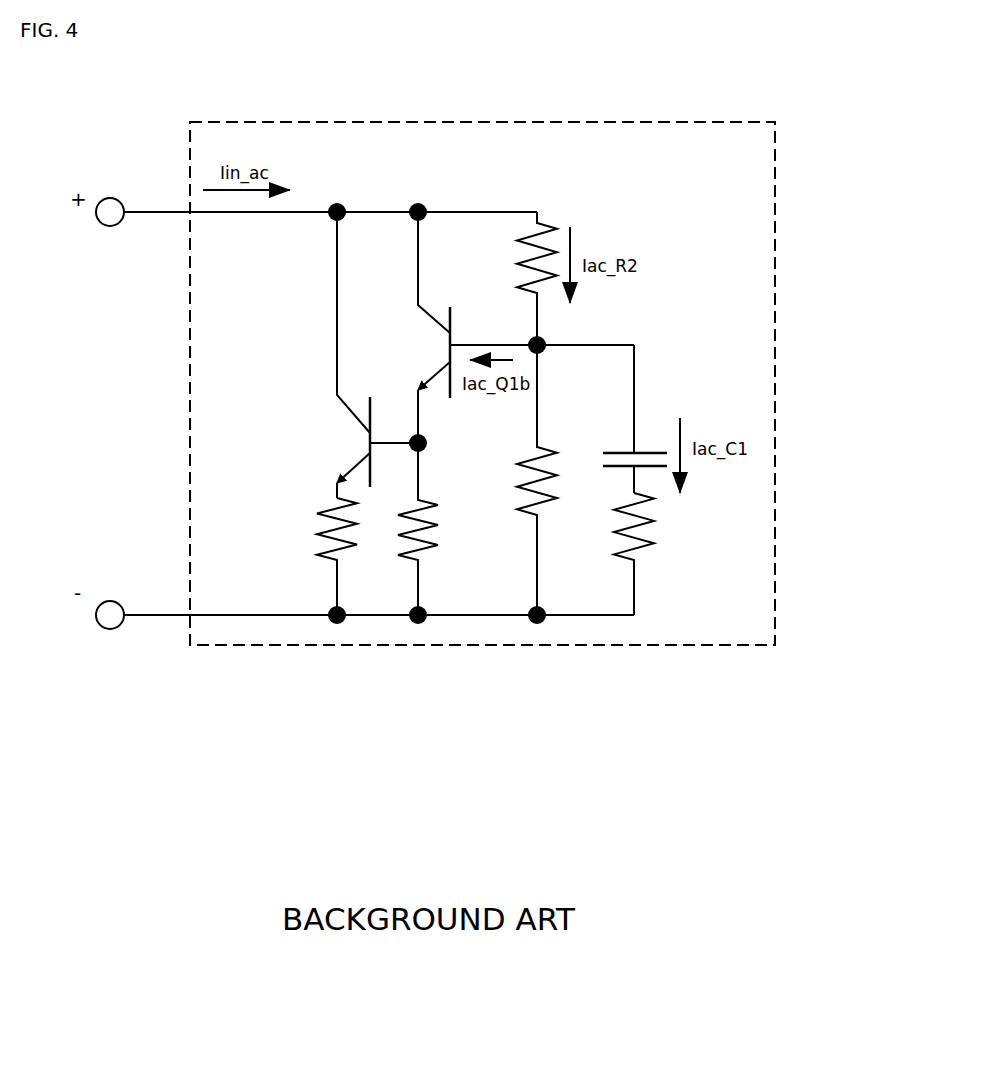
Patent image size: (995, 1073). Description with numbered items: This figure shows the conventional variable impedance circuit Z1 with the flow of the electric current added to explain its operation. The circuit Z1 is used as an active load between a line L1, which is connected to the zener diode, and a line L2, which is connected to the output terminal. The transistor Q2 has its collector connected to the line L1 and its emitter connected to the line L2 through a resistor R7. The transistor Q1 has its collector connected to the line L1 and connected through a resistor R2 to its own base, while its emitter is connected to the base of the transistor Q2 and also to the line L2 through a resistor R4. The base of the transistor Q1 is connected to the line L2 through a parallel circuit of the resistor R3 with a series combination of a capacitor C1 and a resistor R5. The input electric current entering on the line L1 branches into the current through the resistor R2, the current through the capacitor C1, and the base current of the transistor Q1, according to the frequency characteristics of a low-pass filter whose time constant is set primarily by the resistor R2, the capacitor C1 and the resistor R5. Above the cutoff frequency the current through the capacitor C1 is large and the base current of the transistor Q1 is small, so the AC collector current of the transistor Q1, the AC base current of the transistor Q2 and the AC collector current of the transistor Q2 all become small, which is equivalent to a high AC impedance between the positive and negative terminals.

The variable impedance circuit Z1 is at (775, 225).
The line L1 is at (170, 212).
The line L2 is at (170, 614).
The resistor R2 is at (520, 278).
The resistor R3 is at (550, 480).
The resistor R4 is at (438, 529).
The resistor R5 is at (651, 554).
The resistor R7 is at (317, 556).
The transistor Q1 is at (425, 327).
The transistor Q2 is at (364, 355).
The capacitor C1 is at (633, 419).